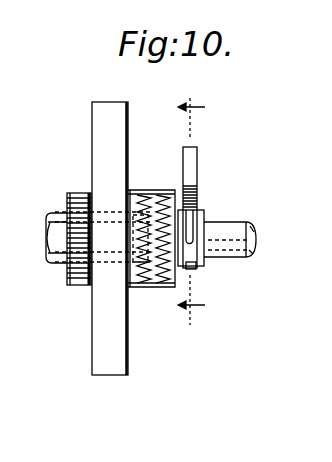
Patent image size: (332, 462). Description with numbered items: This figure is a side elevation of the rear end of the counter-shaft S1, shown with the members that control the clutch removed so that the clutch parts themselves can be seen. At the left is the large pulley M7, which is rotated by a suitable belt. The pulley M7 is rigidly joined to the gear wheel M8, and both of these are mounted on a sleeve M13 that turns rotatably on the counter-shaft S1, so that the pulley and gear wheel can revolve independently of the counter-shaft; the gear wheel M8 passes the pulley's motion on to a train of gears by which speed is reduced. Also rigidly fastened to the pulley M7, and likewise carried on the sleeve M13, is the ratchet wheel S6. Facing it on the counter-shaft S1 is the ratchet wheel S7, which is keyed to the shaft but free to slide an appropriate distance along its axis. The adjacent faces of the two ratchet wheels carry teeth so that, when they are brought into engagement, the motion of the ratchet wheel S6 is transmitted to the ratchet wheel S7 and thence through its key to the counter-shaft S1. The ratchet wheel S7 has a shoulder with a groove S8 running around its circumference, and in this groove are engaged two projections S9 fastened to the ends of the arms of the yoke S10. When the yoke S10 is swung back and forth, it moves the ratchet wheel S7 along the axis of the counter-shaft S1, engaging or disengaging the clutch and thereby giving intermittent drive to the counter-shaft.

The pulley M7 is at (100, 135).
The sleeve M13 is at (72, 262).
The gear wheel M8 is at (72, 286).
The ratchet wheel S6 is at (133, 192).
The ratchet wheel S7 is at (162, 192).
The yoke S10 is at (190, 168).
The projections S9 is at (206, 222).
The groove S8 is at (194, 269).
The counter-shaft S1 is at (246, 258).